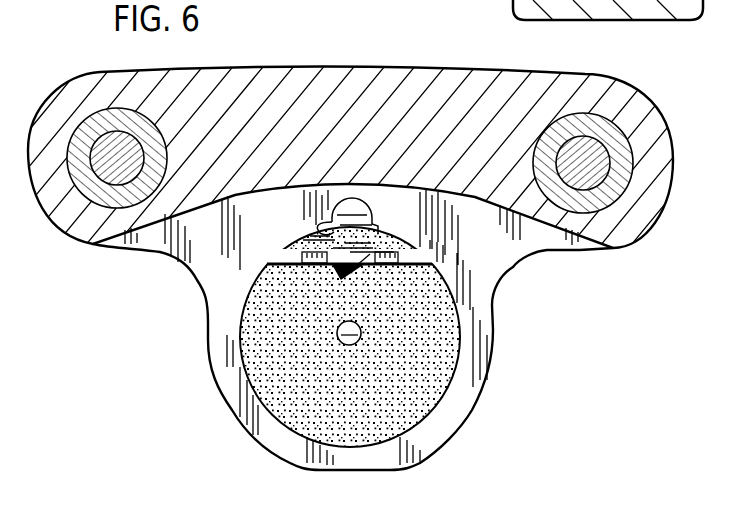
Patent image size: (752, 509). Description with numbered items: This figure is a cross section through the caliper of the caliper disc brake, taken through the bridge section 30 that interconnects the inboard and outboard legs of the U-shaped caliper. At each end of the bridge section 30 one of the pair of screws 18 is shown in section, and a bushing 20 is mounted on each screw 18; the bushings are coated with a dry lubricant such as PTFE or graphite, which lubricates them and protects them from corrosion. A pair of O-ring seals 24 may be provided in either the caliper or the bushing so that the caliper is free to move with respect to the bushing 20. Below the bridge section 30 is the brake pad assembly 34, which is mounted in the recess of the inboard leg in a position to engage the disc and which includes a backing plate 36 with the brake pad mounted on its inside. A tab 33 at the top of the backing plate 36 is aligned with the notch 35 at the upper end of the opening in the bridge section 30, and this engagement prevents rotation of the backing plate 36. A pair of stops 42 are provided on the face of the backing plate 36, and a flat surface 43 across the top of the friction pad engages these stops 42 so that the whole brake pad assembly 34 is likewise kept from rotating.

The screws 18 is at (110, 140).
The bushing 20 is at (77, 178).
The O-ring seals 24 is at (437, 0).
The bridge section 30 is at (222, 78).
The tab 33 is at (367, 213).
The brake pad assembly 34 is at (464, 364).
The notch 35 is at (318, 233).
The backing plate 36 is at (357, 243).
The stops 42 is at (339, 281).
The flat surface 43 is at (288, 265).